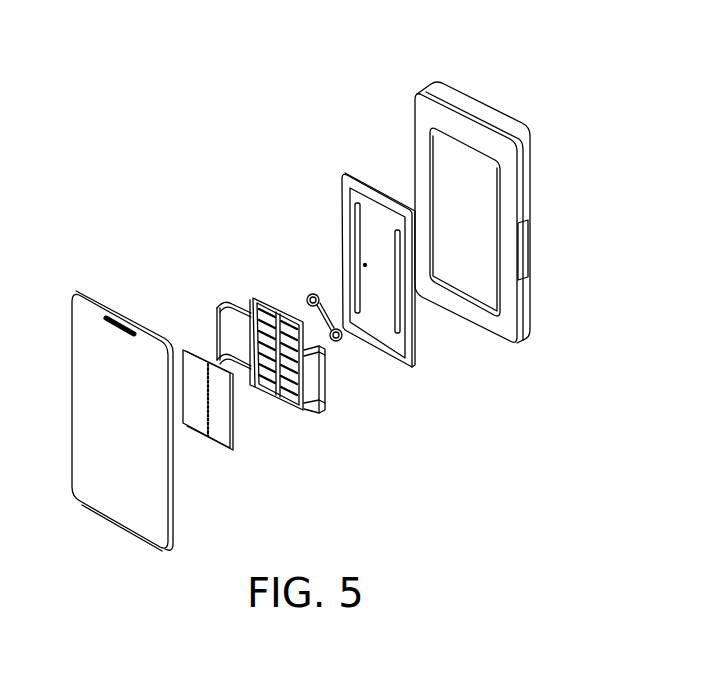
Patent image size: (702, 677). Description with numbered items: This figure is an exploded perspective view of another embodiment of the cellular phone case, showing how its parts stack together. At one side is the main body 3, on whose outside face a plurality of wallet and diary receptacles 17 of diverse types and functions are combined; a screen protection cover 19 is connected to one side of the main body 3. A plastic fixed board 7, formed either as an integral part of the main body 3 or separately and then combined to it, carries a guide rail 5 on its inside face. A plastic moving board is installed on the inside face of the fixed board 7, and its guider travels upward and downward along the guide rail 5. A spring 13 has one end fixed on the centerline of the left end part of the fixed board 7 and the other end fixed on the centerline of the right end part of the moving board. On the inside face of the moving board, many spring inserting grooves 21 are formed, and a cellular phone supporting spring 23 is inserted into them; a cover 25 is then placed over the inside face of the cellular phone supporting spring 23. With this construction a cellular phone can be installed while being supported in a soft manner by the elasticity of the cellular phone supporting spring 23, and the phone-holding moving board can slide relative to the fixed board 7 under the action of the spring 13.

The main body 3 is at (487, 226).
The guide rail 5 is at (378, 284).
The plastic fixed board 7 is at (368, 213).
The spring 13 is at (313, 290).
The wallet and diary receptacles 17 is at (525, 343).
The screen protection cover 19 is at (95, 313).
The spring inserting grooves 21 is at (285, 351).
The cellular phone supporting spring 23 is at (227, 300).
The cover 25 is at (193, 367).